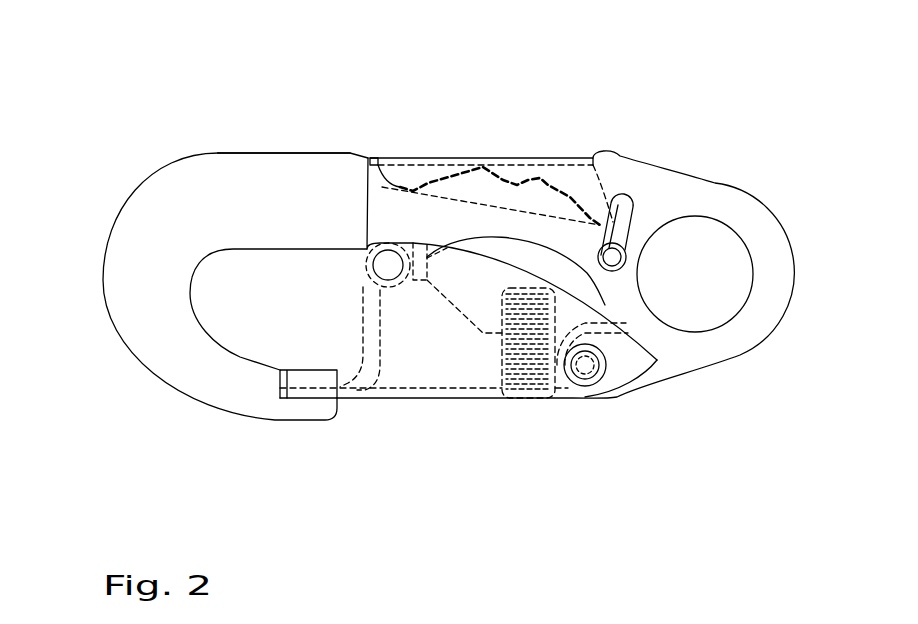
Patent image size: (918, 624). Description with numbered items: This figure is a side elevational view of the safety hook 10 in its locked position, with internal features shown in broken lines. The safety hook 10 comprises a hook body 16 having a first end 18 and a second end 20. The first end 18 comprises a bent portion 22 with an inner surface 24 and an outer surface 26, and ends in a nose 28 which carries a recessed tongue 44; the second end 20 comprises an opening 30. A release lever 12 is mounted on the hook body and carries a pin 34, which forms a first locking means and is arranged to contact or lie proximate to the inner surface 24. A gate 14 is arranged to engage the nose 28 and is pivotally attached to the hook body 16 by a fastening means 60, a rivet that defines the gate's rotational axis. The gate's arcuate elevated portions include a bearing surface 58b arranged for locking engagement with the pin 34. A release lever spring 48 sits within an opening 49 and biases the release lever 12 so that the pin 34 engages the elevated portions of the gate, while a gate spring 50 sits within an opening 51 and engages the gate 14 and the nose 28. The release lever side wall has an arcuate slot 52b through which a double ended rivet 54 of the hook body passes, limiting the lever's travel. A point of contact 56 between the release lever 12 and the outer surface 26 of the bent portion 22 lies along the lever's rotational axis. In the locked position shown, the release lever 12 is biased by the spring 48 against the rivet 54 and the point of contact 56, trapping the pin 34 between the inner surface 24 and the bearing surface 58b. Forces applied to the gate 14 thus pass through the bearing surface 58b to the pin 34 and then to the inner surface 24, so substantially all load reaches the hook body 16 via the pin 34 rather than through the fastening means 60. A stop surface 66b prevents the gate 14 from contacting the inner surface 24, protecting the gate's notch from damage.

The safety hook 10 is at (574, 120).
The release lever 12 is at (411, 155).
The gate 14 is at (437, 402).
The hook body 16 is at (669, 387).
The first end 18 is at (101, 314).
The second end 20 is at (797, 237).
The bent portion 22 is at (138, 260).
The inner surface 24 is at (270, 249).
The outer surface 26 is at (210, 153).
The nose 28 is at (296, 427).
The opening 30 is at (707, 278).
The pin 34 is at (383, 258).
The recessed tongue 44 is at (280, 393).
The release lever spring 48 is at (517, 183).
The opening 49 is at (545, 198).
The gate spring 50 is at (522, 367).
The opening 51 is at (497, 297).
The arcuate slot 52b is at (640, 197).
The double ended rivet 54 is at (612, 257).
The point of contact 56 is at (377, 158).
The bearing surface 58b is at (412, 278).
The fastening means 60 is at (587, 367).
The stop surface 66b is at (343, 390).